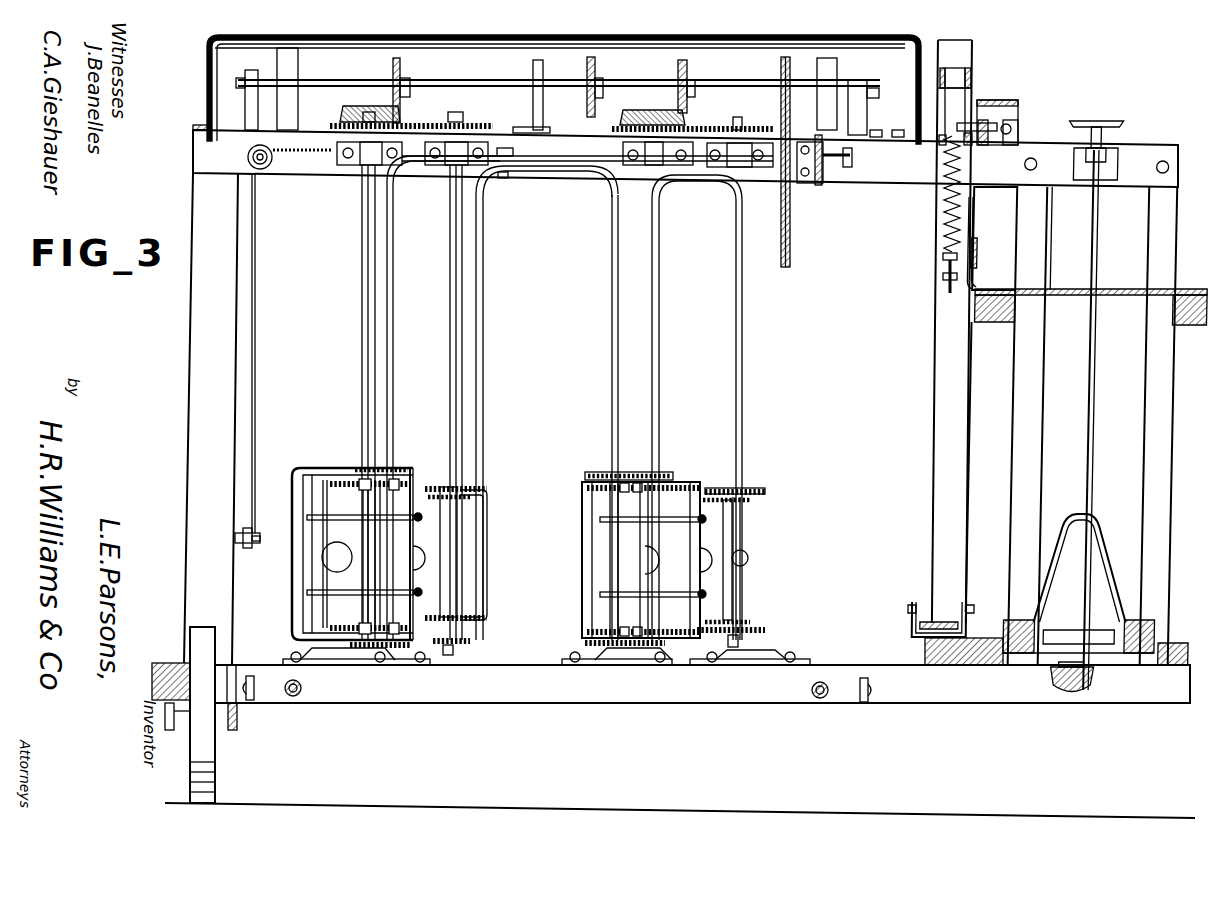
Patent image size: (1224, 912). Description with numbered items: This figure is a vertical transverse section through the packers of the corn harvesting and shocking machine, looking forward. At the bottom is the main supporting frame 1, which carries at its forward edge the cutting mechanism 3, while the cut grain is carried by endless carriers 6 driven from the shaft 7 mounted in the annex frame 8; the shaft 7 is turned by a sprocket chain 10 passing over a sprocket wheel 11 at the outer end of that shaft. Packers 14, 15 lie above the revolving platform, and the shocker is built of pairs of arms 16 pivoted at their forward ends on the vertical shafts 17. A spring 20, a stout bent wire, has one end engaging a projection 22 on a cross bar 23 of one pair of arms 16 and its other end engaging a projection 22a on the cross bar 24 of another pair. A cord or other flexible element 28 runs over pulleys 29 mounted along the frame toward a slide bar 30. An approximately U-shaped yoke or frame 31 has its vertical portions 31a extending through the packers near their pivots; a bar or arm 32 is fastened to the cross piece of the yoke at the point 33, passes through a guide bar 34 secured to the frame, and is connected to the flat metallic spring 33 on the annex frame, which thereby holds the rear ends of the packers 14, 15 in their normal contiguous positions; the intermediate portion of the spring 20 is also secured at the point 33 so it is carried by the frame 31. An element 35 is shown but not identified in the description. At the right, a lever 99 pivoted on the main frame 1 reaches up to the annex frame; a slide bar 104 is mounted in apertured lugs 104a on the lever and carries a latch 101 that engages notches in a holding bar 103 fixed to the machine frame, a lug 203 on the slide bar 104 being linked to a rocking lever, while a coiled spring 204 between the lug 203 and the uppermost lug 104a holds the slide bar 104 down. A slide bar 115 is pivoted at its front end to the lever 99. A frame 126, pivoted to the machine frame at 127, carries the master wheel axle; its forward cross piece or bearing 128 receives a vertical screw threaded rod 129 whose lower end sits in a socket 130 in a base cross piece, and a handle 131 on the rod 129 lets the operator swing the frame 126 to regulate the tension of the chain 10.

The main supporting frame 1 is at (745, 705).
The cutting mechanism 3 is at (643, 705).
The endless carriers 6 is at (405, 484).
The shaft 7 is at (656, 80).
The annex frame 8 is at (298, 173).
The sprocket chain 10 is at (791, 258).
The sprocket wheel 11 is at (793, 75).
The packer 14 is at (300, 468).
The packer 15 is at (600, 474).
The pairs of arms 16 is at (490, 500).
The vertical shafts 17 is at (458, 390).
The spring 20 is at (480, 284).
The projection 22 is at (488, 562).
The projection 22a is at (748, 560).
The cross bar 23 is at (460, 584).
The cross bar 24 is at (742, 590).
The cord or flexible element 28 is at (256, 418).
The pulleys 29 is at (264, 170).
The slide bar 30 is at (1012, 128).
The U-shaped yoke or frame 31 is at (423, 165).
The vertical portions of yoke 31a is at (378, 398).
The bar or arm 32 is at (758, 168).
The flat metallic spring 33 is at (513, 153).
The guide bar 34 is at (818, 186).
The bolt 35 is at (848, 168).
The lever 99 is at (940, 430).
The latch 101 is at (992, 112).
The holding bar 103 is at (995, 223).
The slide bar 104 is at (962, 82).
The apertured lugs 104a is at (943, 142).
The slide bar 115 is at (976, 265).
The frame 126 is at (1143, 654).
The pivot 127 is at (1040, 612).
The cross piece or bearing 128 is at (1060, 640).
The vertical screw threaded rod 129 is at (1099, 256).
The socket 130 is at (1068, 690).
The handle 131 is at (1142, 112).
The lug 203 is at (940, 262).
The coiled spring 204 is at (968, 218).